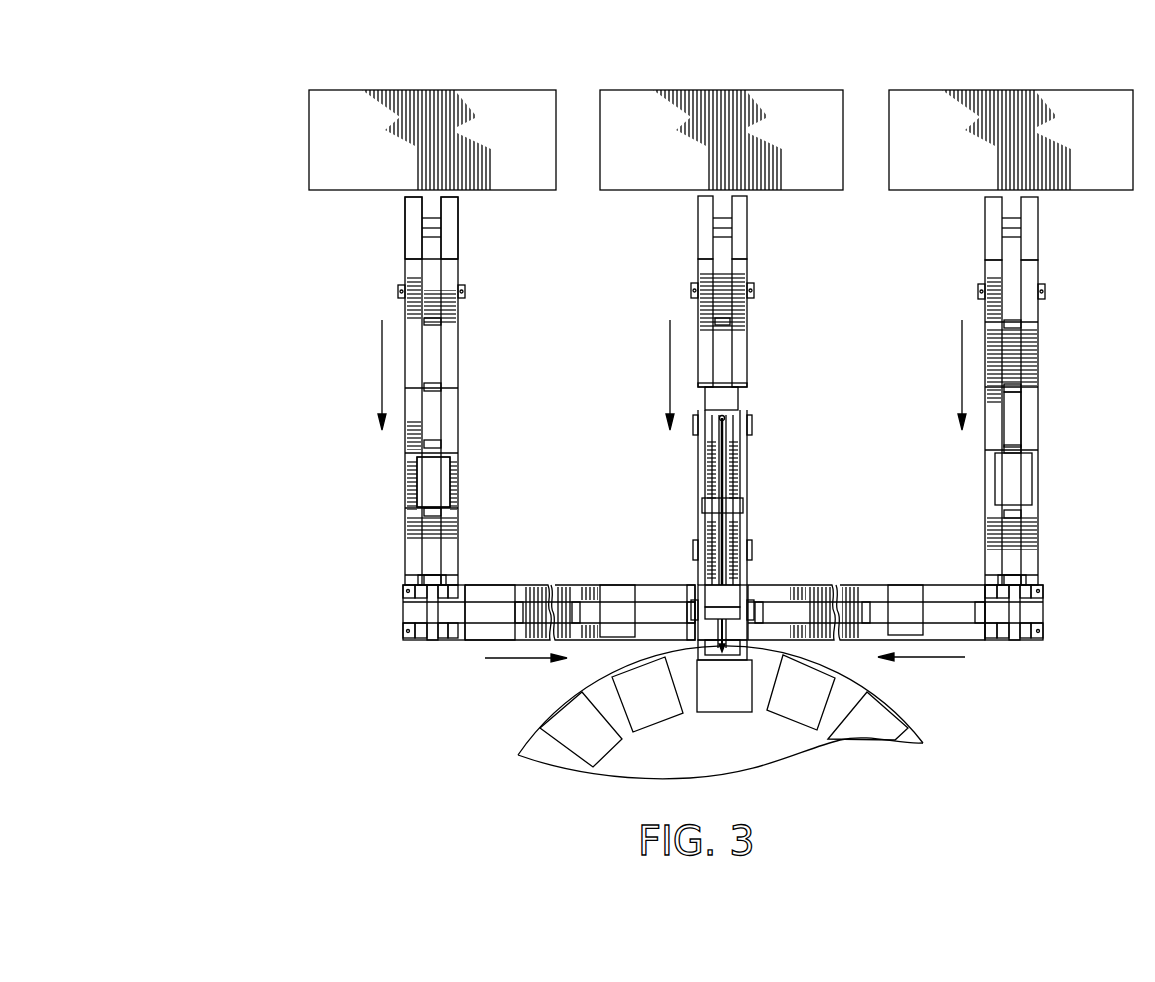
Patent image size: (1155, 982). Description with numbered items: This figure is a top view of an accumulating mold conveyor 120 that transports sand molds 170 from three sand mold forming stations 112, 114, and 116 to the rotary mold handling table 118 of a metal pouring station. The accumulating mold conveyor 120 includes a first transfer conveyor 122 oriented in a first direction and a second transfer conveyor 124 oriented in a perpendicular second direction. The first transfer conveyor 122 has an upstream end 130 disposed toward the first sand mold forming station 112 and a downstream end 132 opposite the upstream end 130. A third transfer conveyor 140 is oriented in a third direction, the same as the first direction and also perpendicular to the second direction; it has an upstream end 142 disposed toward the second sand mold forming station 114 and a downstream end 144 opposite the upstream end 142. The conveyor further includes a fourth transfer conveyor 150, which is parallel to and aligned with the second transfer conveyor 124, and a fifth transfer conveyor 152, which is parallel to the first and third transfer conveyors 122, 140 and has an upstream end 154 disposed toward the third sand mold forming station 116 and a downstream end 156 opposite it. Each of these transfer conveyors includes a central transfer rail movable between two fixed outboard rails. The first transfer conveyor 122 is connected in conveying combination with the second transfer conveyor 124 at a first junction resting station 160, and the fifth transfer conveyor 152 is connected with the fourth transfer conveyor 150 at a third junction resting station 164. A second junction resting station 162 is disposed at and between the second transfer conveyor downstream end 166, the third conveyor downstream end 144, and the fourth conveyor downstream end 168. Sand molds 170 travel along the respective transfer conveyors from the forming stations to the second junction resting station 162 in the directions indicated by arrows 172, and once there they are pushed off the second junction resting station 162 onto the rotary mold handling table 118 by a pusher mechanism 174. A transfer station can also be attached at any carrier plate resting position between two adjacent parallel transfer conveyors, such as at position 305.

The first sand mold forming station 112 is at (345, 190).
The second sand mold forming station 114 is at (648, 192).
The third sand mold forming station 116 is at (938, 192).
The rotary mold handling table 118 is at (923, 743).
The accumulating mold conveyor 120 is at (275, 420).
The first transfer conveyor 122 is at (476, 340).
The second transfer conveyor 124 is at (500, 570).
The upstream end 130 is at (458, 205).
The downstream end 132 is at (405, 578).
The third transfer conveyor 140 is at (760, 342).
The upstream end 142 is at (747, 203).
The downstream end 144 is at (737, 556).
The fourth transfer conveyor 150 is at (950, 570).
The fifth transfer conveyor 152 is at (1050, 350).
The upstream end 154 is at (1038, 238).
The downstream end 156 is at (1040, 560).
The first junction resting station 160 is at (412, 655).
The second junction resting station 162 is at (756, 570).
The third junction resting station 164 is at (1045, 652).
The second transfer conveyor downstream end 166 is at (662, 578).
The fourth conveyor downstream end 168 is at (752, 645).
The sand molds 170 is at (430, 484).
The arrows 172 is at (382, 368).
The pusher mechanism 174 is at (740, 552).
The position 305 is at (476, 652).